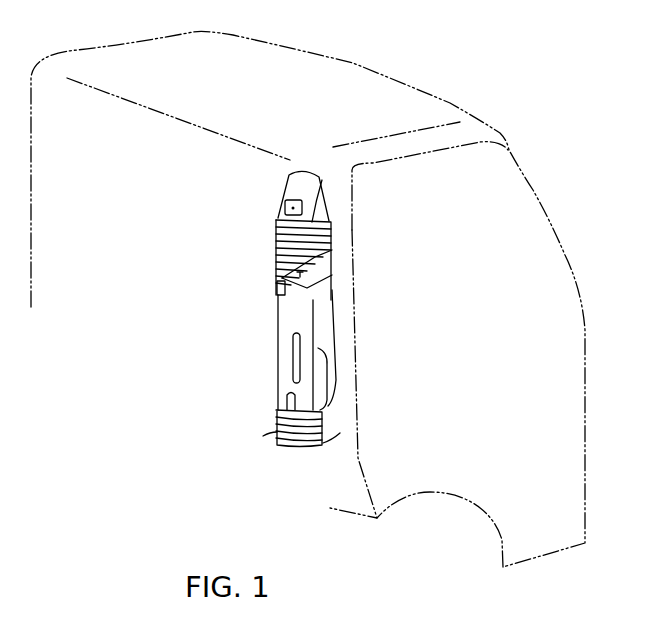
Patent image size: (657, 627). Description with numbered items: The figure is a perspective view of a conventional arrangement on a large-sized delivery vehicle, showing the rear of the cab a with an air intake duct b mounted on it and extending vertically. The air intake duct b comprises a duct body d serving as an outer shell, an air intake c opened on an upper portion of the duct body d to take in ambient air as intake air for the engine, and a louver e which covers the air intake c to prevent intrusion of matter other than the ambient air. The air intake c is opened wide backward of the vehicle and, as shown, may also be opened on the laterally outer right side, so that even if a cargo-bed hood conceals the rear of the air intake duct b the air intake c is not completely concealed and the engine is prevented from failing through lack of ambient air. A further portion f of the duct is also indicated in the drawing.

The cab a is at (482, 120).
The air intake duct b is at (273, 220).
The air intake c is at (277, 279).
The duct body d is at (328, 333).
The louver e is at (275, 242).
The fixing portion f is at (318, 378).